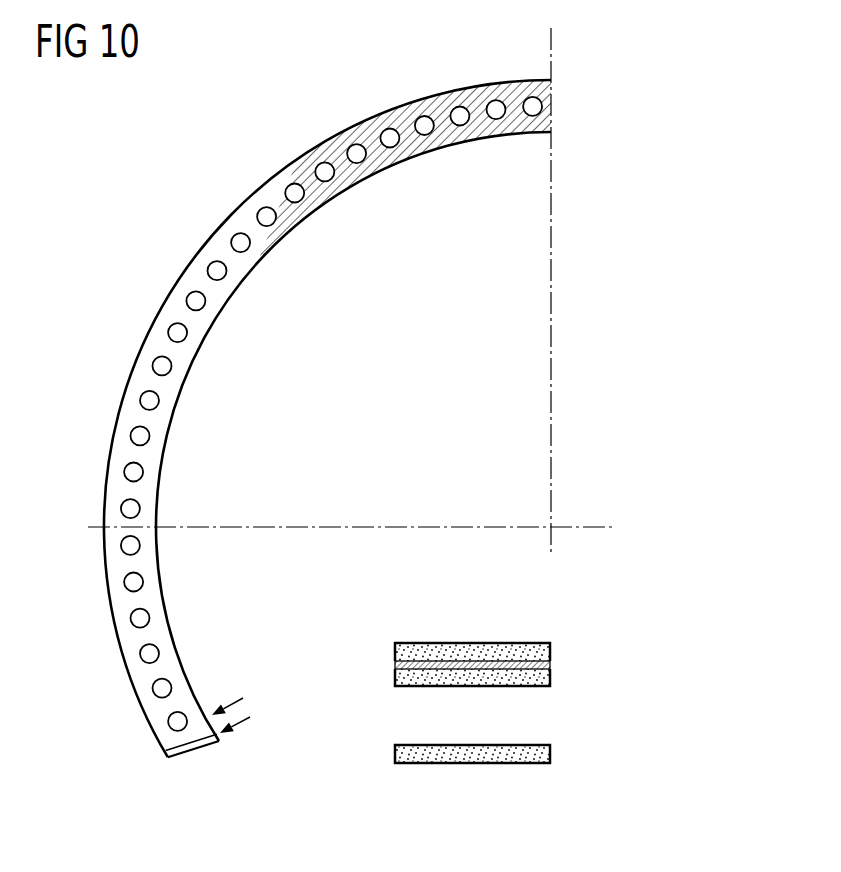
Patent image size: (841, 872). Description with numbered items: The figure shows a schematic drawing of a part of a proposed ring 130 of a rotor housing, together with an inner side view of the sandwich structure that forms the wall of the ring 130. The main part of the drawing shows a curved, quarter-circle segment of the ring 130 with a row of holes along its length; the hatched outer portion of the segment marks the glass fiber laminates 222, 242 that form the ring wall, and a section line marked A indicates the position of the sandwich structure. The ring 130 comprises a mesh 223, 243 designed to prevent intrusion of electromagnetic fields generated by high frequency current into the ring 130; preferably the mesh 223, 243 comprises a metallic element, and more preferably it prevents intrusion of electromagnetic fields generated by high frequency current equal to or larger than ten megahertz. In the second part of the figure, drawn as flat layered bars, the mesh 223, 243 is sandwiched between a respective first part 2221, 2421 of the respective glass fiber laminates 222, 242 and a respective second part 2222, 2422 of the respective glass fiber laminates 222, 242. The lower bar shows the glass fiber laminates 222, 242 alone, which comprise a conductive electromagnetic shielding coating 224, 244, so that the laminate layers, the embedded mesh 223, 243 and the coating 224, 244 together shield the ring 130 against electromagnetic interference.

The ring 130 is at (100, 658).
The glass fiber laminate 222 is at (467, 434).
The glass fiber laminate 242 is at (463, 82).
The first part of the glass fiber laminate 2221 is at (562, 640).
The first part of the glass fiber laminate 2421 is at (566, 650).
The mesh 223 is at (550, 664).
The mesh 243 is at (566, 666).
The second part of the glass fiber laminate 2222 is at (565, 689).
The second part of the glass fiber laminate 2422 is at (566, 682).
The conductive electromagnetic shielding coating 224 is at (511, 789).
The conductive electromagnetic shielding coating 244 is at (511, 779).